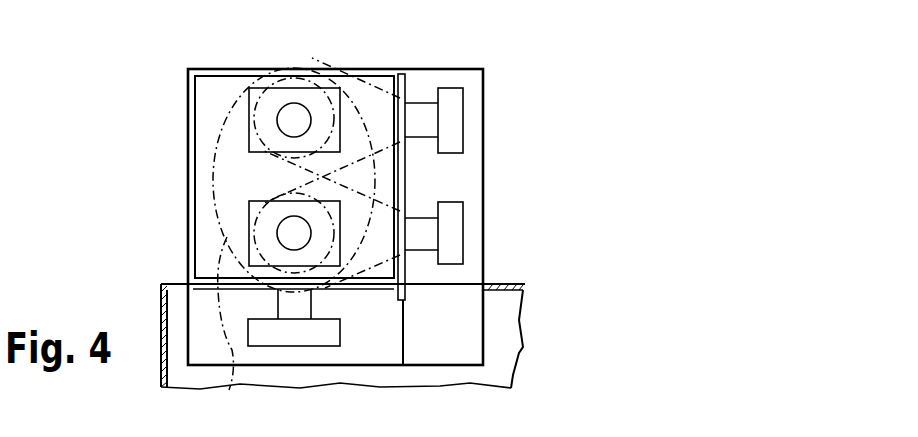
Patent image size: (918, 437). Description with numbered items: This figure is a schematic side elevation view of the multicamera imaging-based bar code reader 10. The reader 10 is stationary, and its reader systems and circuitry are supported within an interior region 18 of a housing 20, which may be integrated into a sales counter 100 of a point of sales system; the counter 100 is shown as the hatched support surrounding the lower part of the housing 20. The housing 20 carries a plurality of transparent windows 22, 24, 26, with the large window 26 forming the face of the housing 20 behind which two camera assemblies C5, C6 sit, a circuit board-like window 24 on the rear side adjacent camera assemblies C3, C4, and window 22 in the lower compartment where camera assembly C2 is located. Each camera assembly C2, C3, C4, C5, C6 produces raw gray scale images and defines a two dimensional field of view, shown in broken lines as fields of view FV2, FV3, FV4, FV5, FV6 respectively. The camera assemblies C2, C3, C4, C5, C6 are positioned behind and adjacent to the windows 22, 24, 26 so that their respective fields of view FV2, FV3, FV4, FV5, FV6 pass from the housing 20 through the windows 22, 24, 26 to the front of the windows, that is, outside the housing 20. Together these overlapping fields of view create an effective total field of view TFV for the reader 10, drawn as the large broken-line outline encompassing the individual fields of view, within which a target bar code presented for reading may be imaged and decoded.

The bar code reader 10 is at (353, 224).
The housing 20 is at (484, 99).
The interior region 18 is at (468, 163).
The transparent window 22 is at (342, 296).
The transparent window 24 is at (410, 188).
The transparent window 26 is at (215, 101).
The sales counter 100 is at (160, 304).
The camera assembly C2 is at (307, 330).
The camera assembly C3 is at (450, 120).
The camera assembly C4 is at (452, 238).
The camera assembly C5 is at (342, 113).
The camera assembly C6 is at (340, 245).
The field of view FV2 is at (240, 327).
The field of view FV3 is at (376, 82).
The field of view FV4 is at (403, 273).
The field of view FV5 is at (261, 101).
The field of view FV6 is at (250, 196).
The total field of view TFV is at (214, 143).